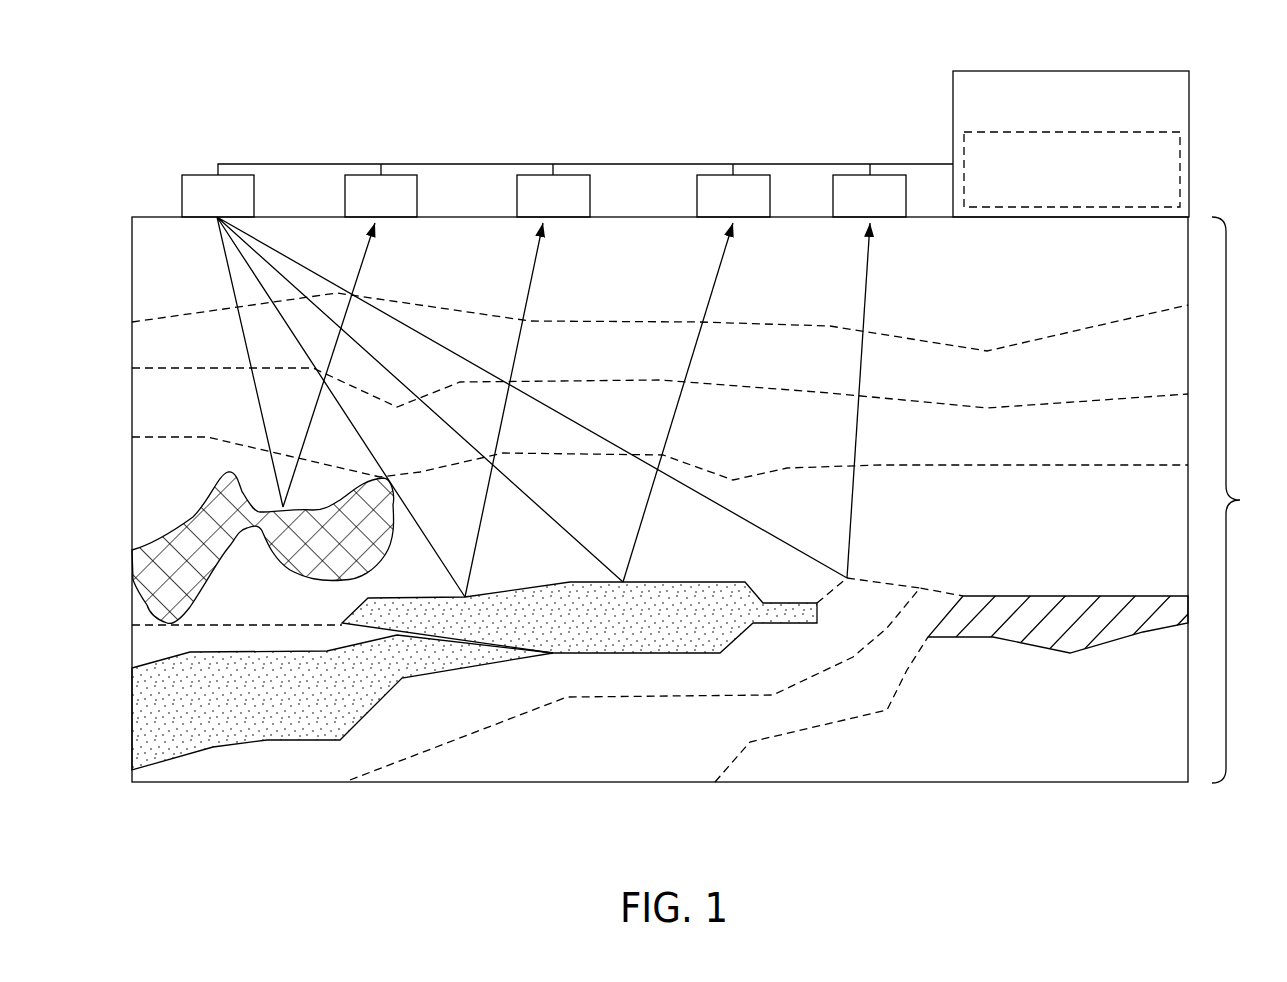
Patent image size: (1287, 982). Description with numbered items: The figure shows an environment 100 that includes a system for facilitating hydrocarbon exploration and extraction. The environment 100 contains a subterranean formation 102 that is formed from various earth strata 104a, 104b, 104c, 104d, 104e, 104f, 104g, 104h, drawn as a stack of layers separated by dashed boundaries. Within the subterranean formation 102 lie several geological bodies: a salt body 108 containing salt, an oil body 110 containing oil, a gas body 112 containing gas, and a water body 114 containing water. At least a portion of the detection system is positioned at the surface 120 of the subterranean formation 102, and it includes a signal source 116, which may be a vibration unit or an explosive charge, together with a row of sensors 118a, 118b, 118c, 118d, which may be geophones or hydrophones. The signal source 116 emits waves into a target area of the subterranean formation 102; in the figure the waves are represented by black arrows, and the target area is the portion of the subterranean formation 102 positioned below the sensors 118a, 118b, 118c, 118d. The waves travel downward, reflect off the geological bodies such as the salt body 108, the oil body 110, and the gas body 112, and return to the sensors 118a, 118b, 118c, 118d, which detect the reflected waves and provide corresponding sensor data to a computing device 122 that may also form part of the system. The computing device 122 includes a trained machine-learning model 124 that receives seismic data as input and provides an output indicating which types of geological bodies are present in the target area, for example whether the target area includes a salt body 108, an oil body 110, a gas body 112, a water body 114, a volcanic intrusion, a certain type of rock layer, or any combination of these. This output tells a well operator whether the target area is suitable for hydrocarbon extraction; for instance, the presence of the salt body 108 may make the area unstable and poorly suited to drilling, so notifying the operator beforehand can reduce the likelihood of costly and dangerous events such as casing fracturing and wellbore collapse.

The environment 100 is at (735, 90).
The subterranean formation 102 is at (707, 500).
The earth stratum 104a is at (153, 280).
The earth stratum 104b is at (153, 350).
The earth stratum 104c is at (153, 407).
The earth stratum 104d is at (153, 493).
The earth stratum 104e is at (153, 643).
The earth stratum 104f is at (268, 768).
The earth stratum 104g is at (600, 768).
The earth stratum 104h is at (975, 768).
The salt body 108 is at (343, 553).
The oil body 110 is at (613, 626).
The gas body 112 is at (1088, 635).
The water body 114 is at (250, 713).
The signal source 116 is at (232, 210).
The sensor 118a is at (398, 210).
The sensor 118b is at (570, 210).
The sensor 118c is at (750, 210).
The sensor 118d is at (885, 210).
The surface 120 is at (153, 216).
The computing device 122 is at (1076, 71).
The trained machine-learning model 124 is at (1178, 122).